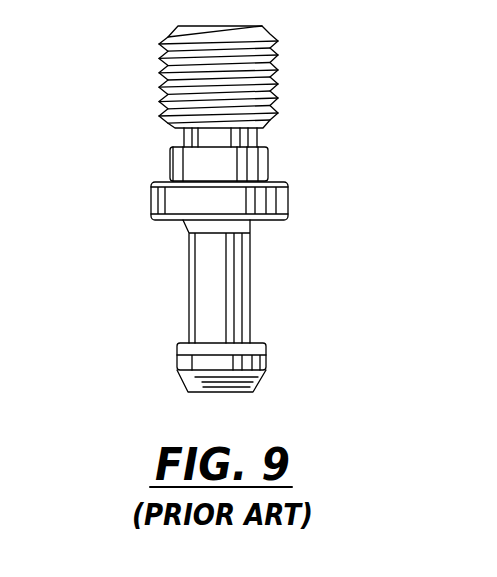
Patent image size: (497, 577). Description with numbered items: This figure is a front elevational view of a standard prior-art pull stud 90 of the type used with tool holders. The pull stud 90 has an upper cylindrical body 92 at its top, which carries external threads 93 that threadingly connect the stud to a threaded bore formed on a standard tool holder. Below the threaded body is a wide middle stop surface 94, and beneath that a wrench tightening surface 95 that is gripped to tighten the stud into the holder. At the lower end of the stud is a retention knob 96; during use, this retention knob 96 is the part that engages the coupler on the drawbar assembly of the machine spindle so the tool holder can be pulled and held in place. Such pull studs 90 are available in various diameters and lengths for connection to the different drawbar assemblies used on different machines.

The pull stud 90 is at (130, 64).
The upper cylindrical body 92 is at (235, 70).
The external threads 93 is at (277, 96).
The wide middle stop surface 94 is at (198, 165).
The wrench tightening surface 95 is at (250, 200).
The retention knob 96 is at (192, 360).